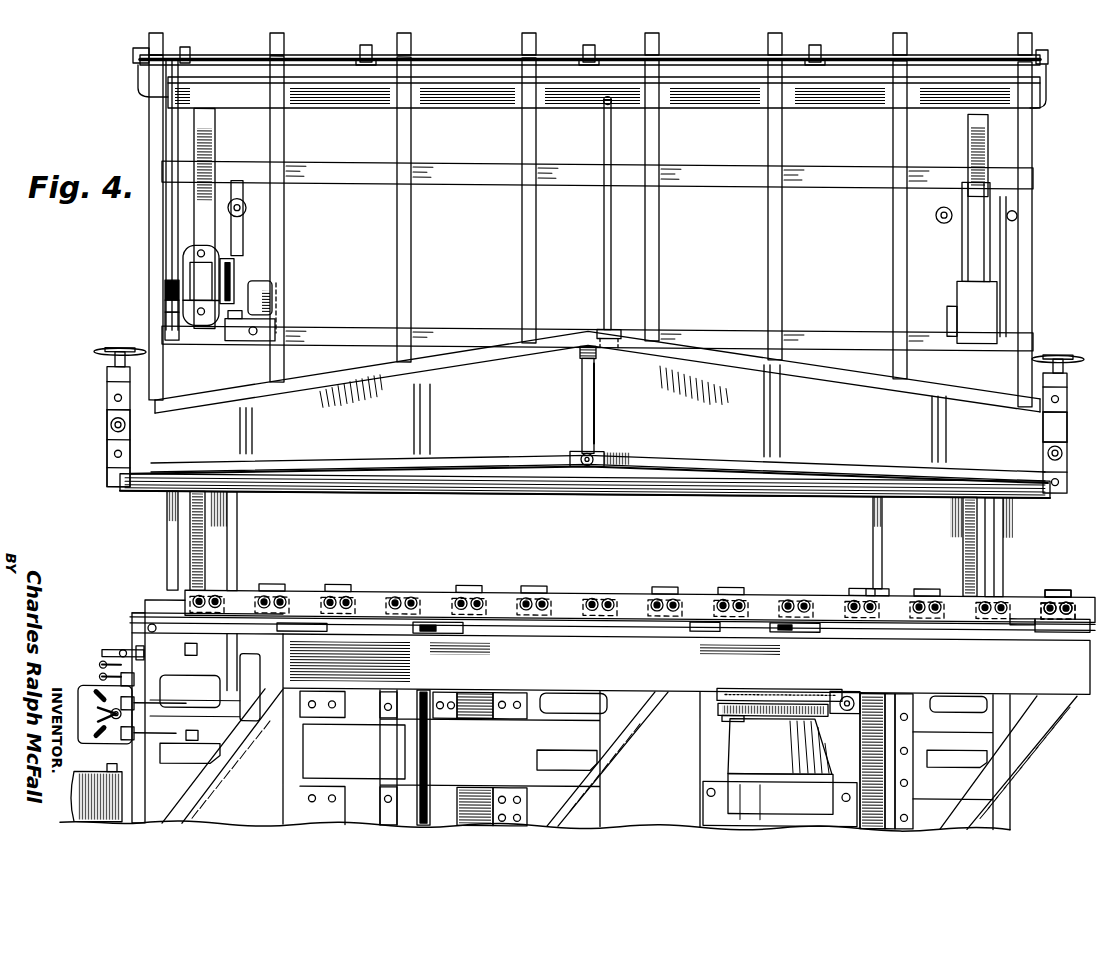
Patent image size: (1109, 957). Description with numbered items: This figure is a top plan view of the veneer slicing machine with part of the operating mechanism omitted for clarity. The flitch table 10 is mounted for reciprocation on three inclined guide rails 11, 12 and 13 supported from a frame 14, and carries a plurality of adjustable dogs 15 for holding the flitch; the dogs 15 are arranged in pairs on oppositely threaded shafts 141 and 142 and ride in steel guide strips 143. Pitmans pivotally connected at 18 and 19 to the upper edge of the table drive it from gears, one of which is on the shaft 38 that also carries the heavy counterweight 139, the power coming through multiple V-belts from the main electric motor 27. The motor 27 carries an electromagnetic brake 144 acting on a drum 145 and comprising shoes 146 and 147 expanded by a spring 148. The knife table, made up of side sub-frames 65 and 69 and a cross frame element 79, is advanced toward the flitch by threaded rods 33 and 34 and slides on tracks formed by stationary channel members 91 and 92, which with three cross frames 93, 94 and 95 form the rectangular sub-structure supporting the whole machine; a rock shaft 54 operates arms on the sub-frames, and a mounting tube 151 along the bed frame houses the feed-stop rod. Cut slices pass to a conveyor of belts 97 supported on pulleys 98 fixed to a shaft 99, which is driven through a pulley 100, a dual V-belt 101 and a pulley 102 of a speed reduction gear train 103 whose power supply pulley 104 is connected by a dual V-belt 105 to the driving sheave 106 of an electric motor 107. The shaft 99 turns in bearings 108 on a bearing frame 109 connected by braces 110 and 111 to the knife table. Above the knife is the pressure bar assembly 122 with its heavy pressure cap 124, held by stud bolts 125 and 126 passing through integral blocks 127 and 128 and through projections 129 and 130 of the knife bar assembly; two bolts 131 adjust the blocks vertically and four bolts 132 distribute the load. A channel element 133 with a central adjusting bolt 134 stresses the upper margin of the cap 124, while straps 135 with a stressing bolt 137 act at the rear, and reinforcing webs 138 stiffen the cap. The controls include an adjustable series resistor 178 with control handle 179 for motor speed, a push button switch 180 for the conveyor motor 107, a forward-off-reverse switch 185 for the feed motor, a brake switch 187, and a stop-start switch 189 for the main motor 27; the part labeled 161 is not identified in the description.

The flitch table 10 is at (515, 590).
The guide rail 11 is at (316, 632).
The guide rail 12 is at (698, 632).
The guide rail 13 is at (1070, 634).
The frame 14 is at (686, 664).
The adjustable dogs 15 is at (335, 583).
The pivotal connection 18 is at (455, 634).
The pivotal connection 19 is at (783, 632).
The main electric motor 27 is at (780, 772).
The threaded rod 33 is at (193, 540).
The threaded rod 34 is at (978, 548).
The shaft 38 is at (430, 772).
The rock shaft 54 is at (873, 541).
The sub-frame 65 is at (985, 318).
The sub-frame 69 is at (186, 322).
The cross frame element 79 is at (717, 338).
The channel member 91 is at (170, 500).
The channel member 92 is at (1004, 514).
The cross frame 93 is at (464, 184).
The cross frame 94 is at (481, 716).
The cross frame 95 is at (475, 790).
The belts 97 is at (149, 234).
The pulleys 98 is at (150, 40).
The shaft 99 is at (728, 56).
The pulley 100 is at (186, 52).
The dual V-belt 101 is at (166, 118).
The pulley 102 is at (165, 283).
The speed reduction gear train 103 is at (201, 285).
The power supply pulley 104 is at (242, 250).
The dual V-belt 105 is at (236, 276).
The driving sheave 106 is at (235, 325).
The electric motor 107 is at (264, 305).
The bearings 108 is at (136, 62).
The bearing frame 109 is at (463, 100).
The brace 110 is at (213, 128).
The brace 111 is at (967, 125).
The pressure bar assembly 122 is at (690, 492).
The pressure cap 124 is at (524, 490).
The stud bolt 125 is at (110, 350).
The stud bolt 126 is at (1067, 349).
The block 127 is at (107, 438).
The block 128 is at (1067, 428).
The integral projection 129 is at (110, 385).
The integral projection 130 is at (1067, 377).
The bolts 131 is at (1067, 452).
The bolts 132 is at (1067, 404).
The channel element 133 is at (442, 438).
The adjusting bolt 134 is at (594, 445).
The straps 135 is at (921, 397).
The stressing bolt 137 is at (589, 326).
The reinforcing webs 138 is at (248, 425).
The counterweight 139 is at (303, 760).
The shaft 141 is at (1072, 592).
The shaft 142 is at (1044, 594).
The steel guide strips 143 is at (1022, 588).
The electromagnetic brake 144 is at (742, 730).
The drum 145 is at (778, 684).
The brake shoe 146 is at (734, 718).
The brake shoe 147 is at (830, 726).
The spring 148 is at (814, 684).
The mounting tube 151 is at (237, 545).
The frame bar 161 is at (130, 647).
The adjustable series resistor 178 is at (86, 688).
The control handle 179 is at (100, 730).
The push button switch 180 is at (185, 660).
The forward-off-reverse switch 185 is at (102, 650).
The switch 187 is at (170, 708).
The push button stop-start switch 189 is at (134, 679).